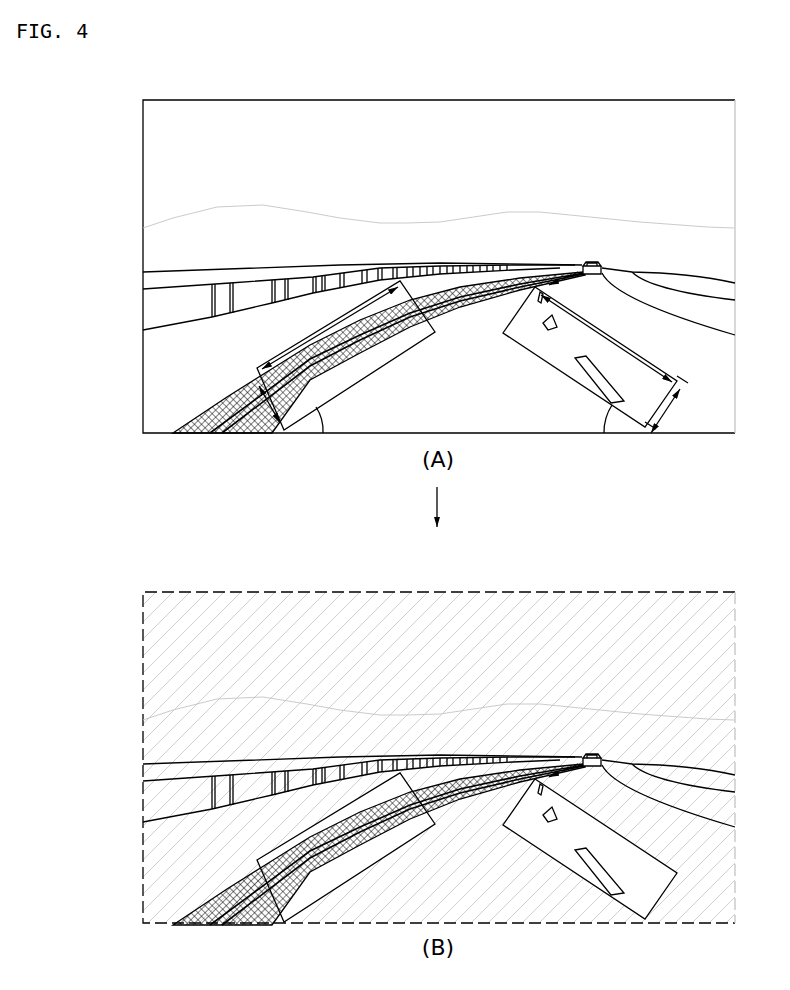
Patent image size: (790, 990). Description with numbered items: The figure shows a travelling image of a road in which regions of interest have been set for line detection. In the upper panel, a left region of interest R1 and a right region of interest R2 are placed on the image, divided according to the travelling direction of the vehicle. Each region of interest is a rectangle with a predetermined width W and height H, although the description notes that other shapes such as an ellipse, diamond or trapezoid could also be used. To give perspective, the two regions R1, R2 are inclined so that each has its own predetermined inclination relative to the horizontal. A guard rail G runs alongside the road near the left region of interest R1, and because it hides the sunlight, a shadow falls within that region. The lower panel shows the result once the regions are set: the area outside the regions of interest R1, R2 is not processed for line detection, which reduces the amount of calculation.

The guard rail G is at (143, 277).
The left region of interest R1 is at (378, 373).
The right region of interest R2 is at (548, 367).
The height H is at (467, 334).
The width W is at (469, 404).